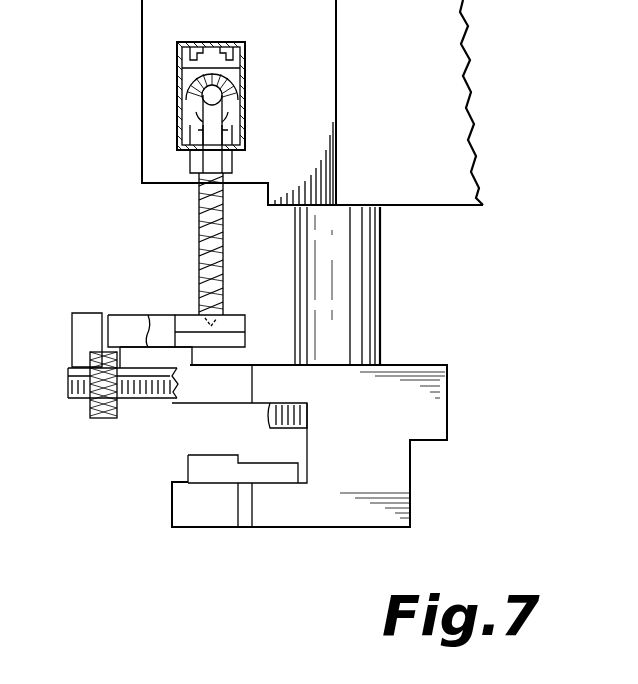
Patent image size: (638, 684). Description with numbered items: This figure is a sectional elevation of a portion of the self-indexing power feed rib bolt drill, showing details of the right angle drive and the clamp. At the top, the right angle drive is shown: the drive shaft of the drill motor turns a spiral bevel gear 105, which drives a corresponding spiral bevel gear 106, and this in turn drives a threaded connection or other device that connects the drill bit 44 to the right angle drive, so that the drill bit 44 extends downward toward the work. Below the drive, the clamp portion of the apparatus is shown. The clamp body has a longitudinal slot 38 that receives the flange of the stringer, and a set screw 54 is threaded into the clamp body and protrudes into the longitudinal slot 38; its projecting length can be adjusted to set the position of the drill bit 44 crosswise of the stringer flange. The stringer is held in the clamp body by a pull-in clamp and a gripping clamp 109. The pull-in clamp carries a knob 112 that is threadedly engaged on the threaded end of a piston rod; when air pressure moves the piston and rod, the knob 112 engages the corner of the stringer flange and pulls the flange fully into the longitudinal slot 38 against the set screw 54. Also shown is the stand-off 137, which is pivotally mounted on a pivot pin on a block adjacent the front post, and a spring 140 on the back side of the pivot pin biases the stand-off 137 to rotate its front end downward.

The gripping clamp 109 is at (345, 102).
The spiral bevel gear 106 is at (182, 78).
The spiral bevel gear 105 is at (182, 122).
The drill bit 44 is at (197, 224).
The stand-off 137 is at (252, 328).
The spring 140 is at (150, 315).
The knob 112 is at (100, 418).
The longitudinal slot 38 is at (167, 432).
The set screw 54 is at (307, 402).